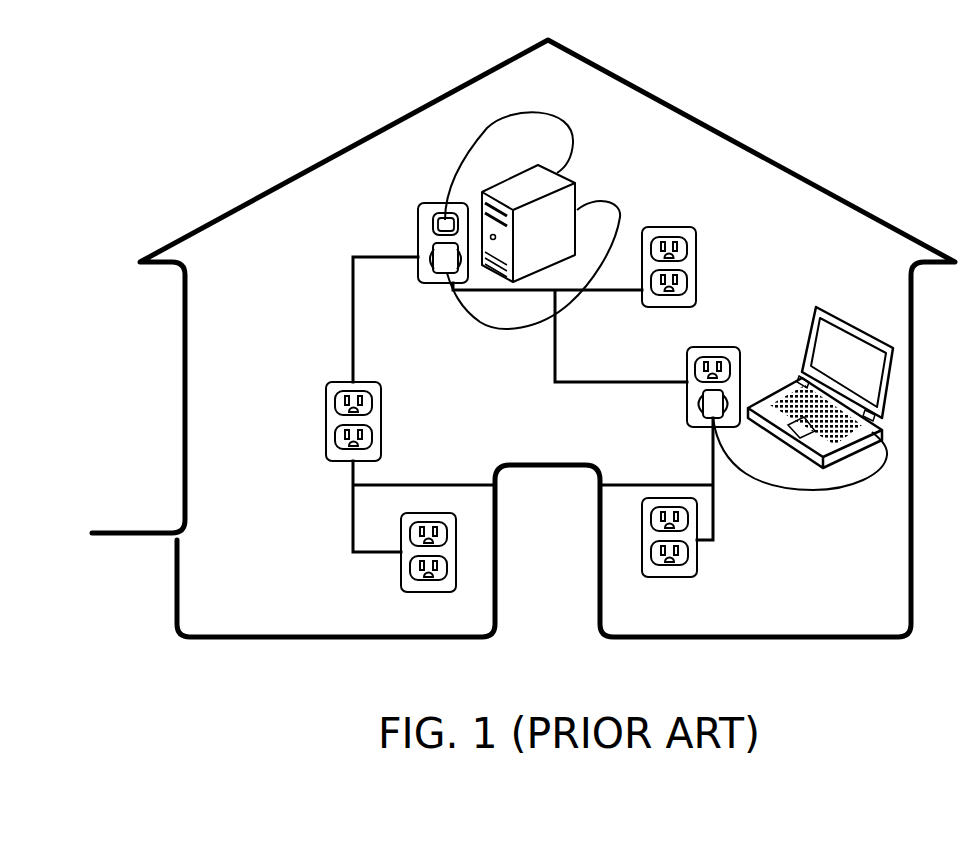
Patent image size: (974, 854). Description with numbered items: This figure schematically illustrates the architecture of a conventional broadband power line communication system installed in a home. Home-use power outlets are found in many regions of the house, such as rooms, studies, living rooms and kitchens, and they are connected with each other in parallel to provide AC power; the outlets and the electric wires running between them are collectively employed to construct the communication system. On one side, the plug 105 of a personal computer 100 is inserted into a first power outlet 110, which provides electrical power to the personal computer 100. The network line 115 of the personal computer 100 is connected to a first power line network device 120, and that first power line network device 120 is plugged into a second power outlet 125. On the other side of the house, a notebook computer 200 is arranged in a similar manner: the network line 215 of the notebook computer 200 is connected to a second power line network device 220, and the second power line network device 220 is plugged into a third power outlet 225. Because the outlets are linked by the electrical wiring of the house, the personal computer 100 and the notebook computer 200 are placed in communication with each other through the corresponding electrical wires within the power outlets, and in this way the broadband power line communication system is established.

The personal computer 100 is at (563, 210).
The plug 105 is at (440, 212).
The first power outlet 110 is at (418, 206).
The network line 115 is at (497, 328).
The first power line network device 120 is at (409, 275).
The second power outlet 125 is at (430, 250).
The notebook computer 200 is at (825, 353).
The network line 215 is at (800, 488).
The second power line network device 220 is at (712, 410).
The third power outlet 225 is at (700, 392).